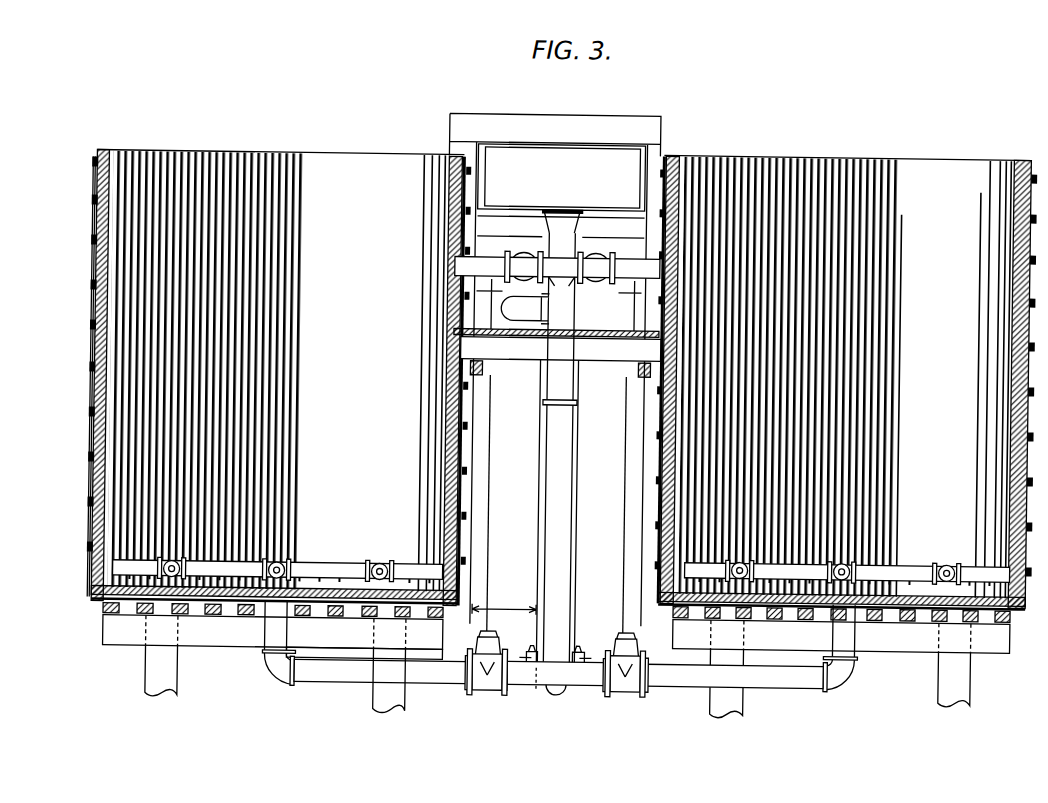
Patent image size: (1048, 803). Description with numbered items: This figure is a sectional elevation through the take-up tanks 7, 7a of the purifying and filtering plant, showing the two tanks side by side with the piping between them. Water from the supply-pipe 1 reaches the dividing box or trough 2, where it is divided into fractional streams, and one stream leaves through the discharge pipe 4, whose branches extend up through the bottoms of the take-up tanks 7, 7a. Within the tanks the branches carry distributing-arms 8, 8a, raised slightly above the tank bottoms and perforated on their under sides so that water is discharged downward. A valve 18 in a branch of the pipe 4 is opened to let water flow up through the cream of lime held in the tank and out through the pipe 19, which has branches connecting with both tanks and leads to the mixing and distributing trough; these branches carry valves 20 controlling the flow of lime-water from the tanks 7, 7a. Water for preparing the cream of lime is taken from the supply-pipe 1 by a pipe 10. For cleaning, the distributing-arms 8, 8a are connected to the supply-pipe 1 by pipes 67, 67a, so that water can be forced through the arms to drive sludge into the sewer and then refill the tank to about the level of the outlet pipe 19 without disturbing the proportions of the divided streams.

The supply-pipe 1 is at (579, 522).
The dividing box or trough 2 is at (562, 177).
The discharge pipe 4 is at (552, 555).
The take-up tank 7 is at (845, 388).
The take-up tank 7a is at (278, 383).
The distributing-arms 8 is at (908, 566).
The distributing-arms 8a is at (327, 573).
The pipe 10 is at (510, 605).
The valve 18 is at (502, 648).
The pipe 19 is at (536, 307).
The valve 20 is at (518, 257).
The pipe 67 is at (606, 686).
The pipe 67a is at (527, 686).